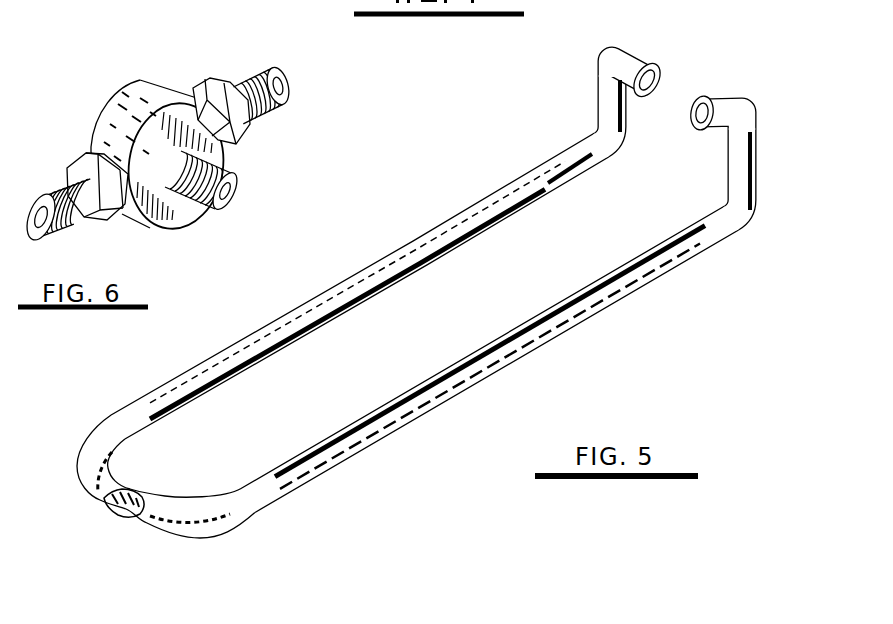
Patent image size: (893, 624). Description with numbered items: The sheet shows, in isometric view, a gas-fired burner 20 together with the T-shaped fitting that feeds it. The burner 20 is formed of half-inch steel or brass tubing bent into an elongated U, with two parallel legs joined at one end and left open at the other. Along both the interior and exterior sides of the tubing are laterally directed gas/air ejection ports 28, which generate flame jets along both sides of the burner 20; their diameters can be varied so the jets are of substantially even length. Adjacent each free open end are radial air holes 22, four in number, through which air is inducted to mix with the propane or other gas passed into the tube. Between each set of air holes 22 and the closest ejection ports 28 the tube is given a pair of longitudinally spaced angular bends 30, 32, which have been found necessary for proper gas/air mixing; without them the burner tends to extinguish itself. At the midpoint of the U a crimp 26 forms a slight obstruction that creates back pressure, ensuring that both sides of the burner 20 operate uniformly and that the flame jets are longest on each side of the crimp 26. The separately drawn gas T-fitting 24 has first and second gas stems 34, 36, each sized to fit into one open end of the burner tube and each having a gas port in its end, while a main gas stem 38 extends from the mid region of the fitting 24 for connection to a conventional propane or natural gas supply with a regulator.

In FIG. 5, the burner tube 20 is at (445, 285).
In FIG. 5, the radial air holes 22 is at (640, 58).
In FIG. 6, the gas T-fitting 24 is at (162, 140).
In FIG. 5, the crimp 26 is at (142, 488).
In FIG. 5, the gas/air ejection ports 28 is at (493, 227).
In FIG. 5, the angular bend 30 is at (598, 130).
In FIG. 5, the angular bend 32 is at (597, 50).
In FIG. 6, the first gas stem 34 is at (71, 236).
In FIG. 6, the second gas stem 36 is at (251, 68).
In FIG. 6, the main gas stem 38 is at (234, 168).